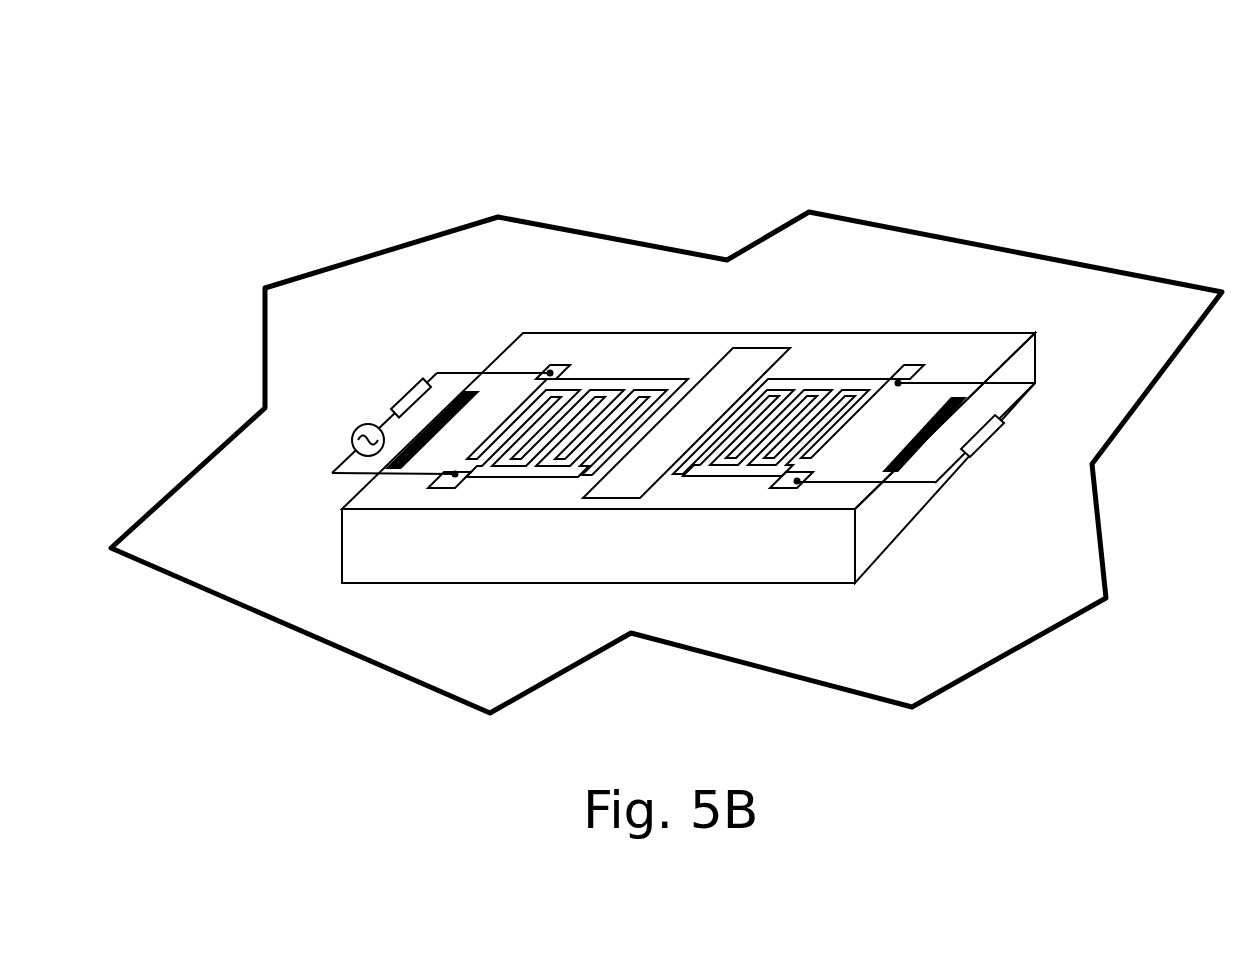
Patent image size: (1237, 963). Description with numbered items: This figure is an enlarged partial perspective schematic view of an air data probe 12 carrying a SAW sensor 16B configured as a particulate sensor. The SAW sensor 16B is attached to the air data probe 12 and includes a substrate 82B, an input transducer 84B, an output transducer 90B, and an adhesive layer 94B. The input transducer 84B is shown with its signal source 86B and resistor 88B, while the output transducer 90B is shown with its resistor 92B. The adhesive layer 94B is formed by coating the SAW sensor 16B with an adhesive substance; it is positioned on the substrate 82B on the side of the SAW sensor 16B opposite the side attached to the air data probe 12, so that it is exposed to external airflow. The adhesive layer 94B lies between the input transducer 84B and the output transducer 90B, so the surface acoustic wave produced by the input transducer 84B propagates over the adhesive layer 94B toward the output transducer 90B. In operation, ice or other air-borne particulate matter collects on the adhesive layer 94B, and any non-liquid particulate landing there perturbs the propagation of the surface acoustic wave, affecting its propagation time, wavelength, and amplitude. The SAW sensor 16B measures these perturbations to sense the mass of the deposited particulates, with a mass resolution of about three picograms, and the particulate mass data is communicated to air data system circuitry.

The air data probe 12 is at (666, 377).
The SAW sensor 16B is at (666, 447).
The substrate 82B is at (439, 543).
The input transducer 84B is at (627, 368).
The signal source 86B is at (354, 436).
The resistor 88B is at (399, 400).
The output transducer 90B is at (838, 368).
The resistor 92B is at (996, 447).
The adhesive layer 94B is at (734, 377).